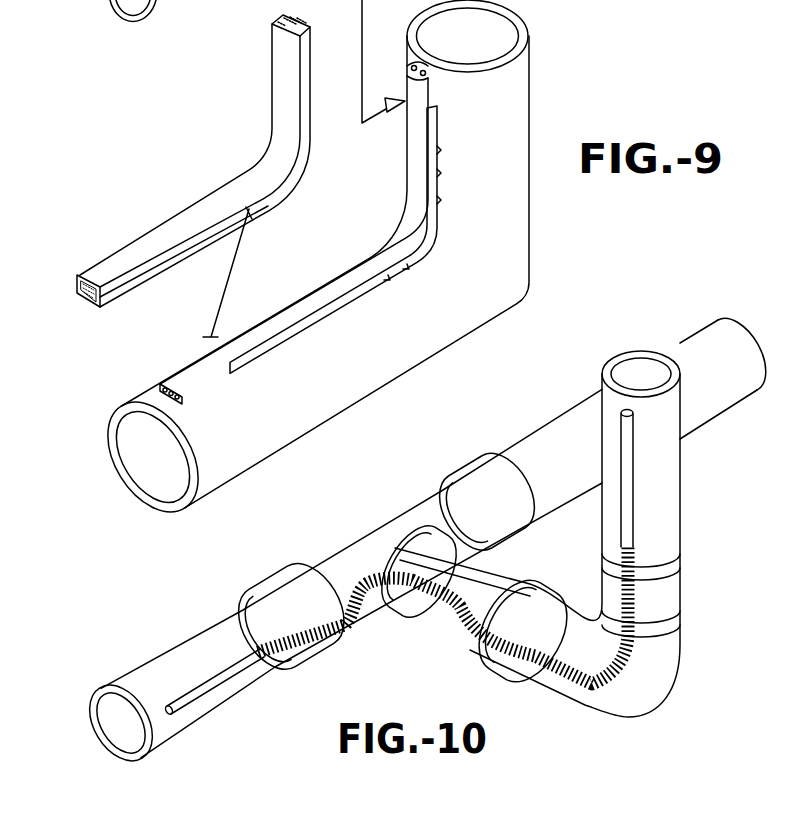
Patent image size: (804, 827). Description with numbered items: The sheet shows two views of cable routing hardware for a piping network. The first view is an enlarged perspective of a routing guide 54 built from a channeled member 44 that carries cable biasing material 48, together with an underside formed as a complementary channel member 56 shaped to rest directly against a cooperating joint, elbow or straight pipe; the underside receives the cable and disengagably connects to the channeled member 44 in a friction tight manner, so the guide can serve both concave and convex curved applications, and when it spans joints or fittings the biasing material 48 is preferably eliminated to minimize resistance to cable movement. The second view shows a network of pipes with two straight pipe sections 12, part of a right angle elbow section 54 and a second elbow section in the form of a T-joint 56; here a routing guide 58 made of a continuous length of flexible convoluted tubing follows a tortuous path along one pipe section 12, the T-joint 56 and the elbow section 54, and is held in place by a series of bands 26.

In FIG. 10, the straight pipe section 12 is at (540, 443).
In FIG. 10, the band 26 is at (243, 607).
In FIG. 9, the channeled member 44 is at (147, 240).
In FIG. 9, the cable biasing material 48 is at (90, 300).
In FIG. 9, the routing guide / right angle elbow section 54 is at (76, 251).
In FIG. 10, the routing guide / right angle elbow section 54 is at (657, 690).
In FIG. 9, the complementary channel member / T-joint 56 is at (262, 353).
In FIG. 10, the complementary channel member / T-joint 56 is at (437, 615).
In FIG. 10, the routing guide 58 is at (350, 573).